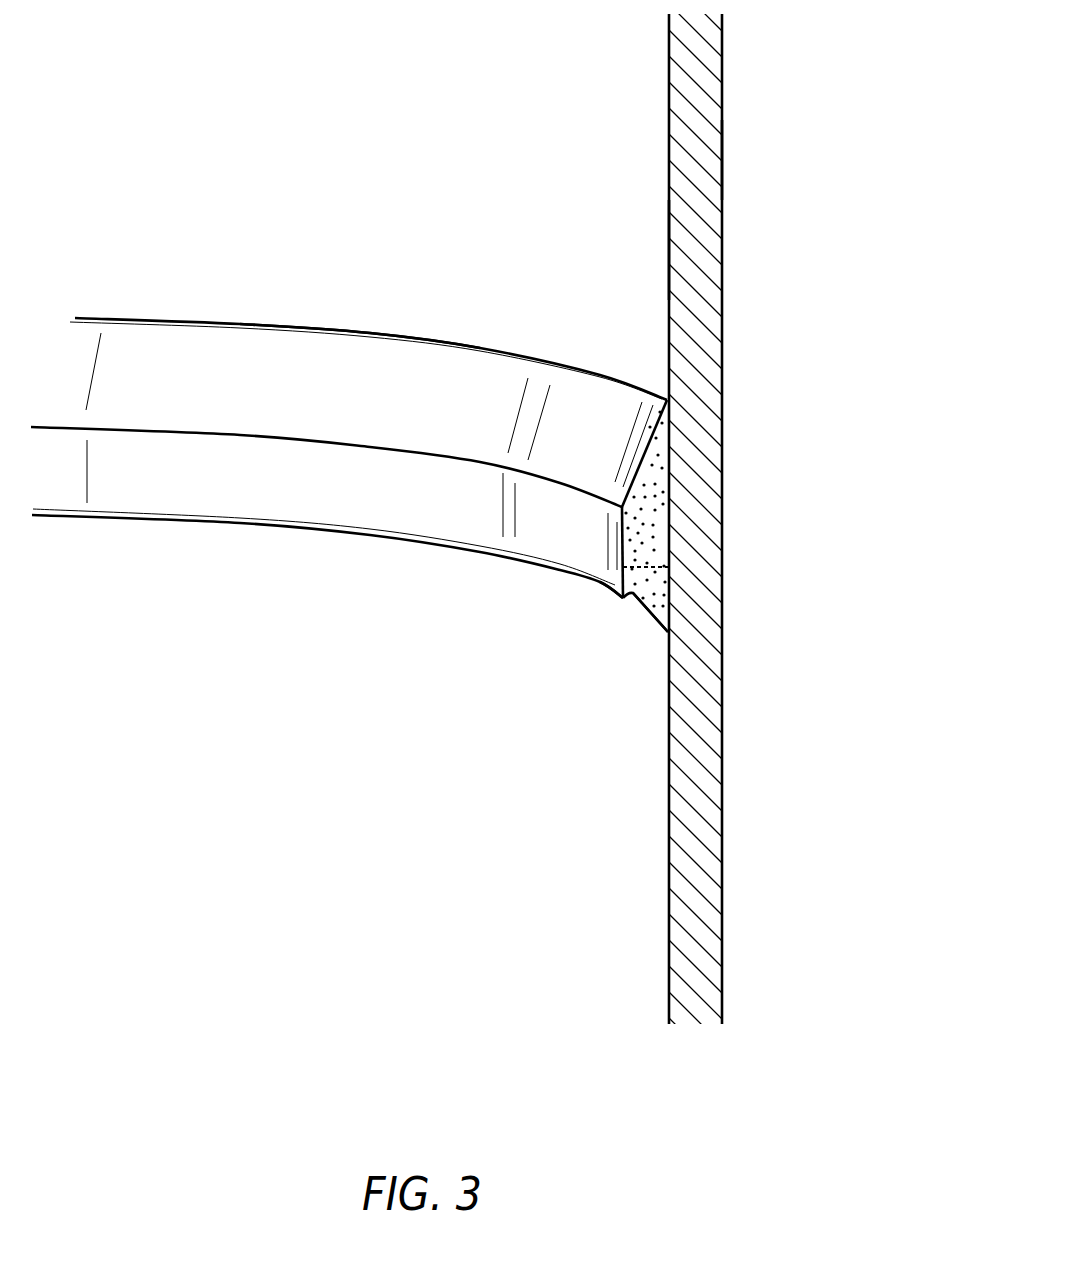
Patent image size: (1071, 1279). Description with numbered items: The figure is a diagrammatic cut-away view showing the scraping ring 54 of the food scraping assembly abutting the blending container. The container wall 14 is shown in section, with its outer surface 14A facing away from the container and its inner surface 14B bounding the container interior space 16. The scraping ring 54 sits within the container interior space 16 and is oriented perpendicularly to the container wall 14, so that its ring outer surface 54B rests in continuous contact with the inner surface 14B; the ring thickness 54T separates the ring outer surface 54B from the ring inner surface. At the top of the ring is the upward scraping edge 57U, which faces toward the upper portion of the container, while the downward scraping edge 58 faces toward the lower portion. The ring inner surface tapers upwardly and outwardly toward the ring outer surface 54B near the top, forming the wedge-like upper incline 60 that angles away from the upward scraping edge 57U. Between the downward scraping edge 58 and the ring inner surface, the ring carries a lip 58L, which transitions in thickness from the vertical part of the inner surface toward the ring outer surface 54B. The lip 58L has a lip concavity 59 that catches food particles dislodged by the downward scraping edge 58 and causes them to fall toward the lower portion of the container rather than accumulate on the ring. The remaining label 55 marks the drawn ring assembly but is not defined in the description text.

The container wall 14 is at (713, 57).
The outer surface 14A is at (723, 157).
The inner surface 14B is at (565, 238).
The sealing strip 55 is at (180, 550).
The upper incline 60 is at (230, 382).
The upward scraping edge 57U is at (333, 328).
The scraping ring 54 is at (647, 513).
The ring outer surface 54B is at (669, 470).
The ring thickness 54T is at (653, 569).
The downward scraping edge 58 is at (667, 634).
The lip 58L is at (627, 598).
The lip concavity 59 is at (655, 618).
The container interior space 16 is at (307, 653).